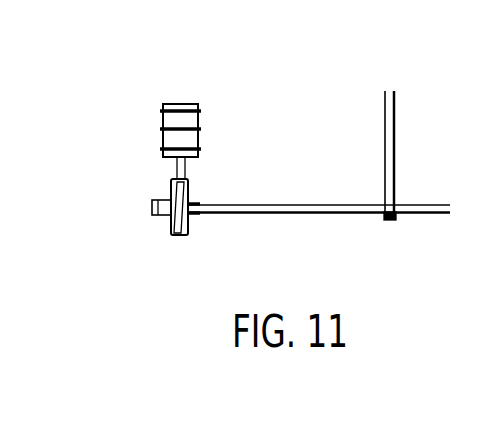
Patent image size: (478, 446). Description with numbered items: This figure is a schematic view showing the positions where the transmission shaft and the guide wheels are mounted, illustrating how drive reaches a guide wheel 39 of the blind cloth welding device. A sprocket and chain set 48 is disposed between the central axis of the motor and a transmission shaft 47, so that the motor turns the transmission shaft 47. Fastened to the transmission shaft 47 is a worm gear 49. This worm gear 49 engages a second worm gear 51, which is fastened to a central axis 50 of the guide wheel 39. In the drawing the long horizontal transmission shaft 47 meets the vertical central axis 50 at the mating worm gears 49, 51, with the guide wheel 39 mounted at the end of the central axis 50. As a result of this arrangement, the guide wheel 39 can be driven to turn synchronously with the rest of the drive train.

The guide wheel 39 is at (172, 105).
The transmission shaft 47 is at (273, 208).
The sprocket and chain set 48 is at (390, 165).
The worm gear 49 is at (193, 215).
The central axis 50 is at (182, 168).
The worm gear 51 is at (162, 202).